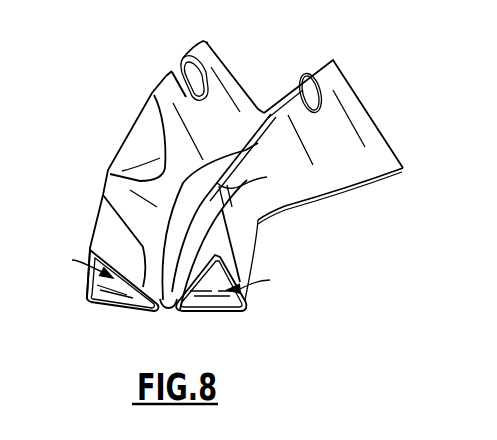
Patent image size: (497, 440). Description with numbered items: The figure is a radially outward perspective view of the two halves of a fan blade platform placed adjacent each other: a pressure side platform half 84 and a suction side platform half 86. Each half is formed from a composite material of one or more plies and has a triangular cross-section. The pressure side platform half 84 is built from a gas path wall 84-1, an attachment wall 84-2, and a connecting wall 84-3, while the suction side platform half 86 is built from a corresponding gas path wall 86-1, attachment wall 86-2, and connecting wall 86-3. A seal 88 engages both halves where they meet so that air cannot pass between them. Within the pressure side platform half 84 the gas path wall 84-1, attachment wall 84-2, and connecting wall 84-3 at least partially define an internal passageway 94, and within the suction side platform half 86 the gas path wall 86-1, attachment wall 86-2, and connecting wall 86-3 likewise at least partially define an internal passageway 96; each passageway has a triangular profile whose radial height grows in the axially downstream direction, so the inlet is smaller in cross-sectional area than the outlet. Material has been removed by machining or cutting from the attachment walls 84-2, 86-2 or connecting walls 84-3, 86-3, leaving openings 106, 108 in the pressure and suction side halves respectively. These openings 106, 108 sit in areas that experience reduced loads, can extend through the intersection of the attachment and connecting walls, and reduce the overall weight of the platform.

The pressure side platform half 84 is at (172, 175).
The gas path wall 84-1 is at (123, 310).
The attachment wall 84-2 is at (160, 83).
The connecting wall 84-3 is at (173, 72).
The suction side platform half 86 is at (322, 188).
The gas path wall 86-1 is at (232, 316).
The attachment wall 86-2 is at (372, 150).
The connecting wall 86-3 is at (259, 110).
The seal 88 is at (167, 314).
The internal passageway 94 is at (78, 261).
The internal passageway 96 is at (263, 280).
The opening 106 is at (132, 152).
The opening 108 is at (262, 195).